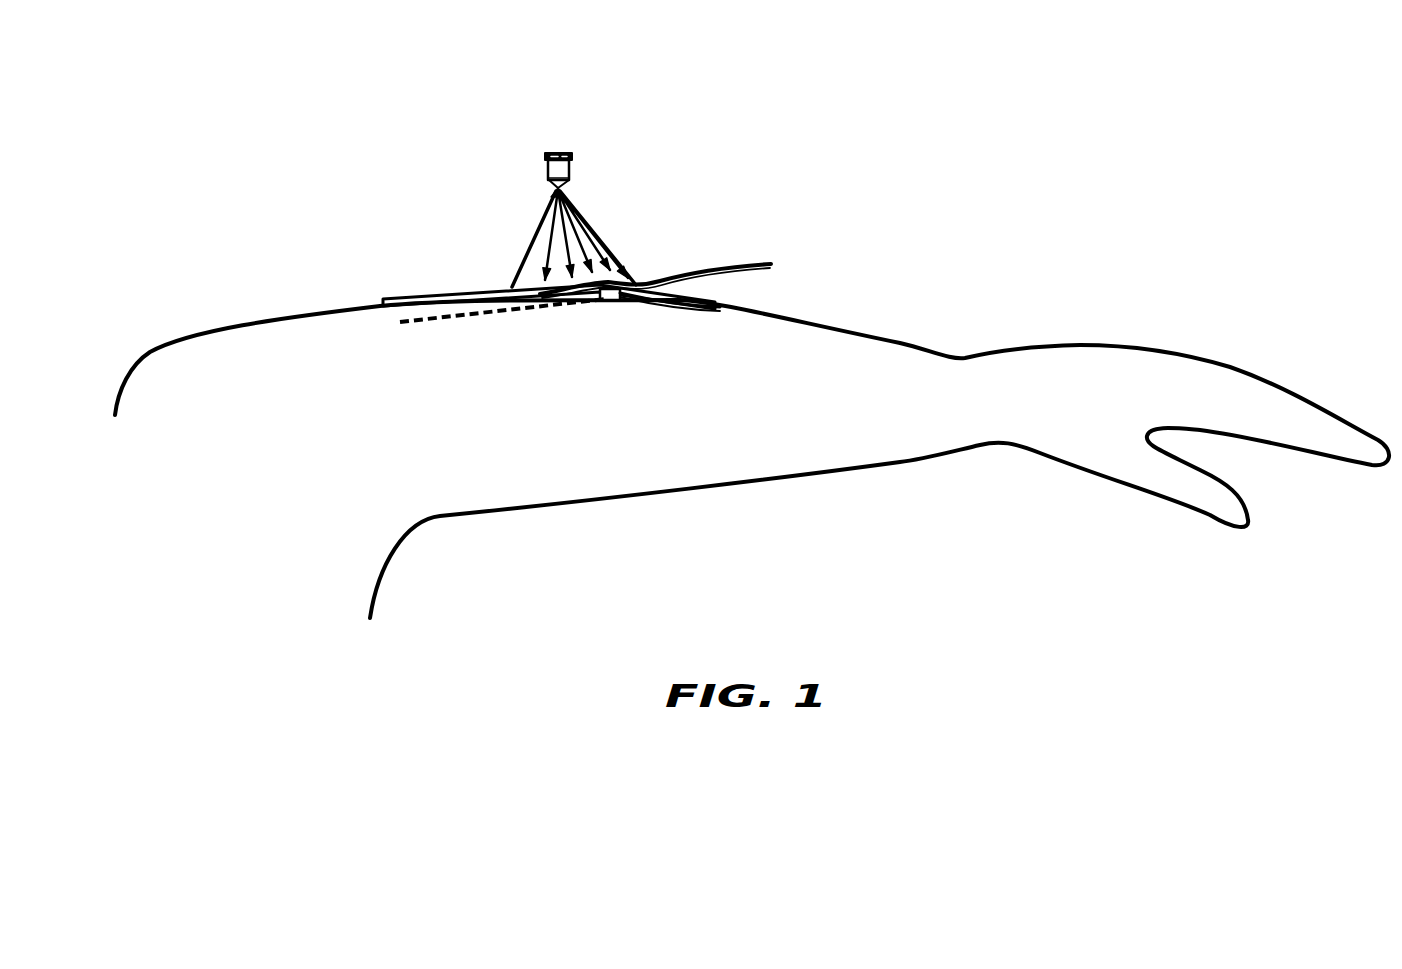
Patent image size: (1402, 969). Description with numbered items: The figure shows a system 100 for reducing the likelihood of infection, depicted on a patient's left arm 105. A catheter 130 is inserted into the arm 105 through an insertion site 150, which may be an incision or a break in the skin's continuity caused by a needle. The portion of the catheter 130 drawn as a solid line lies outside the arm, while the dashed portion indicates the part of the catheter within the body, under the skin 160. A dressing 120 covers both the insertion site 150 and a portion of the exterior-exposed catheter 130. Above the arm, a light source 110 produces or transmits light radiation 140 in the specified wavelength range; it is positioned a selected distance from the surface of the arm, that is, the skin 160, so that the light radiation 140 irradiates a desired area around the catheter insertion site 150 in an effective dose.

The system 100 is at (716, 153).
The arm 105 is at (850, 300).
The light source 110 is at (562, 152).
The dressing 120 is at (453, 292).
The catheter 130 is at (728, 262).
The light radiation 140 is at (530, 247).
The insertion site 150 is at (578, 312).
The skin 160 is at (545, 327).